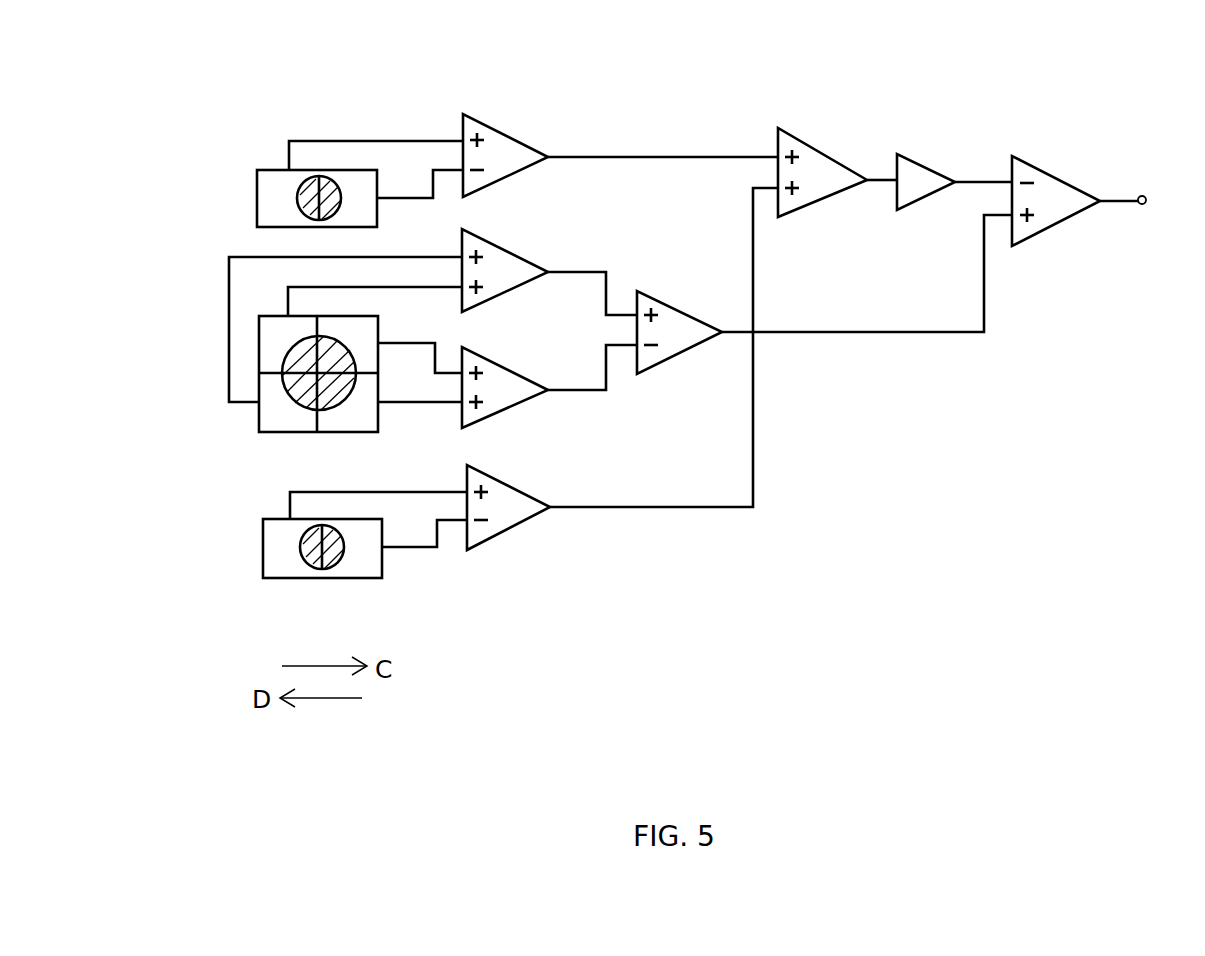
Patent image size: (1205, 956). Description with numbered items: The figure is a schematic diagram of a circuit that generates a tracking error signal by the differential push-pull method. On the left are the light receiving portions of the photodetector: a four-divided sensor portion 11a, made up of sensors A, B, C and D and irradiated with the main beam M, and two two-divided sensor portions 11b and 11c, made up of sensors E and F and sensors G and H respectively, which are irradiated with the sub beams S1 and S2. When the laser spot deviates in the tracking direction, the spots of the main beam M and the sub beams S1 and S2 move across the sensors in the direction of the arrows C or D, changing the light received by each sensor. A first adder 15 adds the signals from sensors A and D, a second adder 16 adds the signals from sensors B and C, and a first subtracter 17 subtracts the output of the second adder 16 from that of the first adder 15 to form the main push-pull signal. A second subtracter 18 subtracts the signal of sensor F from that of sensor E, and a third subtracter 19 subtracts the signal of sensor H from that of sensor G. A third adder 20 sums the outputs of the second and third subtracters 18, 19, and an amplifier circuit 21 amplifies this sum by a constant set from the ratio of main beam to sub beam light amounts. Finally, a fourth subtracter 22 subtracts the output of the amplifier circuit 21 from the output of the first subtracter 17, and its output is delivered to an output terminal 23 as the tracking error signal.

The four-divided sensor portion 11a is at (259, 355).
The two-divided sensor portion 11b is at (257, 205).
The two-divided sensor portion 11c is at (263, 545).
The first adder 15 is at (495, 256).
The second adder 16 is at (497, 375).
The first subtracter 17 is at (680, 322).
The second subtracter 18 is at (497, 140).
The third subtracter 19 is at (505, 490).
The third adder 20 is at (823, 165).
The amplifier circuit 21 is at (916, 170).
The fourth subtracter 22 is at (1048, 215).
The output terminal 23 is at (1143, 208).
The sub beam S1 is at (319, 176).
The sub beam S2 is at (328, 572).
The main beam M is at (298, 403).